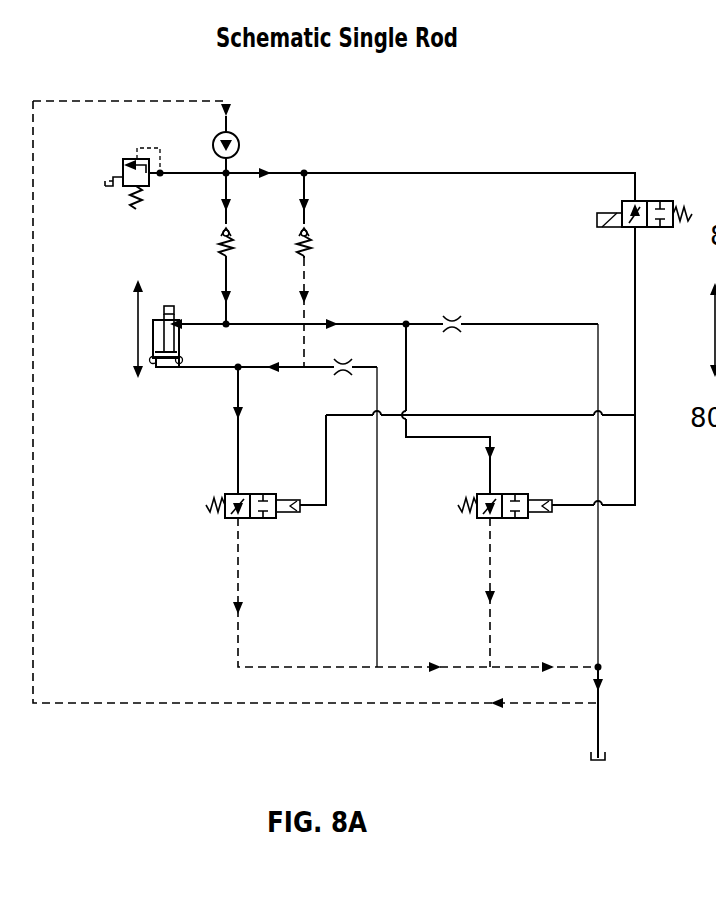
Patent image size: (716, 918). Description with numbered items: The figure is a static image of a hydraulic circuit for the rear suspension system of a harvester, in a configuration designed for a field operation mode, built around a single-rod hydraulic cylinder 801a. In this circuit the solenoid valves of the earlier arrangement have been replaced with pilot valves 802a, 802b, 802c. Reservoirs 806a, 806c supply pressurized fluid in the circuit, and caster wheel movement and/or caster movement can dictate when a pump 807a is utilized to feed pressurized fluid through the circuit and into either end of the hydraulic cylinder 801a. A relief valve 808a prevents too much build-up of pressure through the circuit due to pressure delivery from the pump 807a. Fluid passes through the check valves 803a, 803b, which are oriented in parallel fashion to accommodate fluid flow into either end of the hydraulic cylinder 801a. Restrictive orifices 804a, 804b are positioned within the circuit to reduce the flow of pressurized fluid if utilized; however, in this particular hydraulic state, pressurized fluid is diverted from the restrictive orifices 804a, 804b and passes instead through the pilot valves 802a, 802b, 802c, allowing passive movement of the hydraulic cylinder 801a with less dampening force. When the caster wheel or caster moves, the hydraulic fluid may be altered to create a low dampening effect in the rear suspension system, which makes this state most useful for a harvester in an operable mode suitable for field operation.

The single-rod hydraulic cylinder 801a is at (160, 368).
The pilot valve 802a is at (270, 519).
The pilot valve 802b is at (484, 519).
The pilot valve 802c is at (662, 201).
The check valve 803a is at (268, 222).
The check valve 803b is at (311, 246).
The restrictive orifice 804a is at (345, 375).
The restrictive orifice 804b is at (452, 333).
The reservoir 806a is at (606, 755).
The reservoir 806c is at (108, 187).
The pump 807a is at (239, 146).
The relief valve 808a is at (150, 186).